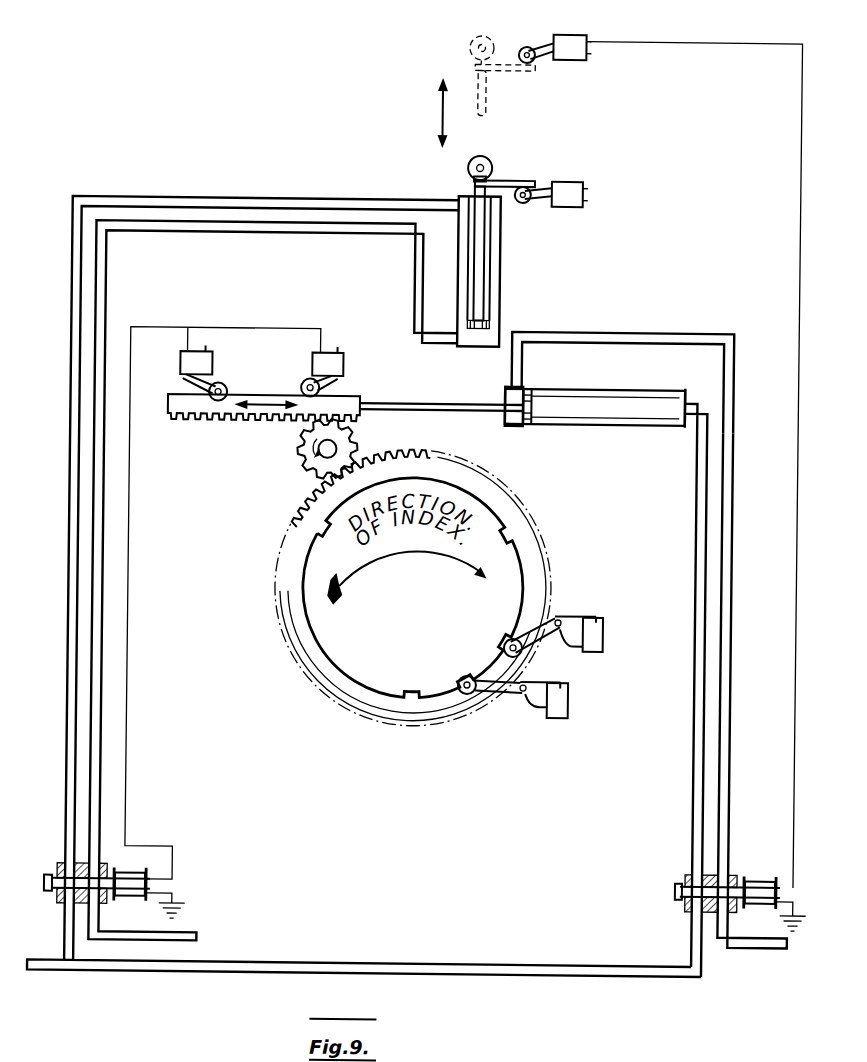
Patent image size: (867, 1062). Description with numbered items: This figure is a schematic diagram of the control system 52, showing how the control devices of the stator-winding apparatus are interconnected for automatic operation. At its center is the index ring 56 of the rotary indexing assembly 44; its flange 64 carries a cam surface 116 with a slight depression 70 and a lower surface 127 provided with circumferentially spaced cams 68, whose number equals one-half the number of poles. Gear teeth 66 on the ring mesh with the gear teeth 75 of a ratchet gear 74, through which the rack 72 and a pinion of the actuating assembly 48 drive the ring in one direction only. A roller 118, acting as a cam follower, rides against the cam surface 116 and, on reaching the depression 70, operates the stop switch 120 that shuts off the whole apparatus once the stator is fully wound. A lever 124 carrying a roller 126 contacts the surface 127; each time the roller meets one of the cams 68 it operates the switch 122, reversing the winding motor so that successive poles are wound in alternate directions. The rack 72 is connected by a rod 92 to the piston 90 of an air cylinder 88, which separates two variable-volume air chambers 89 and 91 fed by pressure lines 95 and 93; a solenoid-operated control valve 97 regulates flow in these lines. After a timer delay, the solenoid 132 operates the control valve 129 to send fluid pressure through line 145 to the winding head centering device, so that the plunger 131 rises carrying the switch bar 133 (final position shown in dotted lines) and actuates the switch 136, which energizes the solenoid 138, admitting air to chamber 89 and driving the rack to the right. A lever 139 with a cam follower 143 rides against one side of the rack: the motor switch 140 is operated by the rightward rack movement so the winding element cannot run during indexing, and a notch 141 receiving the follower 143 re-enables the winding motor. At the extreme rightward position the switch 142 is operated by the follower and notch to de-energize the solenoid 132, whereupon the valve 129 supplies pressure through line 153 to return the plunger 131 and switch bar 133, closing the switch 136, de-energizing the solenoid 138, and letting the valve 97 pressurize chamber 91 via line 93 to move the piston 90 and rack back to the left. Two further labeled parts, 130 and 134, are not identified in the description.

The rotary indexing assembly 44 is at (292, 512).
The actuating assembly 48 is at (565, 392).
The control system 52 is at (294, 729).
The index ring 56 is at (540, 562).
The flange 64 is at (322, 650).
The gear teeth 66 is at (402, 453).
The cams 68 is at (318, 532).
The depression 70 is at (466, 696).
The rack 72 is at (262, 427).
The ratchet gear 74 is at (302, 435).
The gear teeth 75 is at (305, 462).
The air cylinder 88 is at (625, 390).
The air chamber 89 is at (506, 392).
The piston 90 is at (527, 408).
The air chamber 91 is at (668, 400).
The rod 92 is at (425, 402).
The pressure line 93 is at (696, 750).
The pressure line 95 is at (732, 752).
The control valve 97 is at (690, 898).
The cam surface 116 is at (343, 677).
The roller 118 is at (471, 696).
The stop switch 120 is at (542, 720).
The switch 122 is at (582, 652).
The lever 124 is at (513, 640).
The roller 126 is at (522, 668).
The surface 127 is at (525, 618).
The control valve 129 is at (62, 868).
The cylinder 130 is at (498, 298).
The plunger 131 is at (484, 103).
The solenoid 132 is at (137, 900).
The switch bar 133 is at (508, 60).
The solenoid 134 is at (572, 182).
The switch 136 is at (576, 35).
The solenoid 138 is at (767, 876).
The lever 139 is at (192, 383).
The motor switch 140 is at (210, 356).
The notch 141 is at (228, 395).
The switch 142 is at (343, 364).
The cam follower 143 is at (302, 383).
The line 145 is at (103, 698).
The line 153 is at (69, 682).